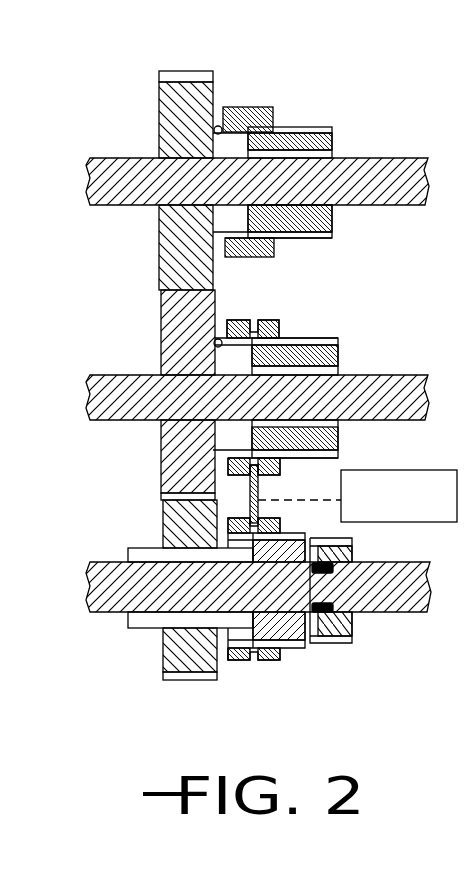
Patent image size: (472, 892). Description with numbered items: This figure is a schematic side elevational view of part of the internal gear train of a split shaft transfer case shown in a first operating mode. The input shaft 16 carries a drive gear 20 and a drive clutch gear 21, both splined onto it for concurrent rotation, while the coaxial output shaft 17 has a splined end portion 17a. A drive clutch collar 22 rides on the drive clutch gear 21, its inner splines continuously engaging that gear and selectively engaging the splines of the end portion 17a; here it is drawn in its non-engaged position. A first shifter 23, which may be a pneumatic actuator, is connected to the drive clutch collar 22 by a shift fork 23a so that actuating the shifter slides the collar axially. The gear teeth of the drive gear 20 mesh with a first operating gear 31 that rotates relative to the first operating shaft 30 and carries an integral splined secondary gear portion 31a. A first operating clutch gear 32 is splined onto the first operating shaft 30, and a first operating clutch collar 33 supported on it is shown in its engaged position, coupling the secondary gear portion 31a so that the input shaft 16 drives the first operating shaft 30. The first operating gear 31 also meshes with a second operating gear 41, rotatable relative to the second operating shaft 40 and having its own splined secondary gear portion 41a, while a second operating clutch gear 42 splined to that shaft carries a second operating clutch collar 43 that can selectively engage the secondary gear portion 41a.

The input shaft 16 is at (115, 598).
The output shaft 17 is at (395, 612).
The end portion 17a is at (345, 630).
The drive gear 20 is at (200, 683).
The drive clutch gear 21 is at (288, 648).
The drive clutch collar 22 is at (238, 662).
The first shifter 23 is at (425, 480).
The shift fork 23a is at (258, 485).
The first operating shaft 30 is at (380, 390).
The first operating gear 31 is at (182, 478).
The secondary gear portion 31a is at (218, 338).
The first operating clutch gear 32 is at (338, 355).
The first operating clutch collar 33 is at (278, 330).
The second operating shaft 40 is at (376, 180).
The second operating gear 41 is at (183, 265).
The secondary gear portion 41a is at (219, 125).
The second operating clutch gear 42 is at (333, 143).
The second operating clutch collar 43 is at (272, 128).